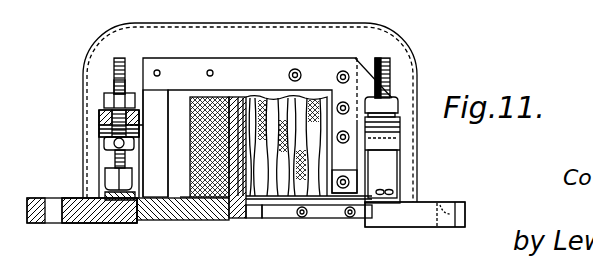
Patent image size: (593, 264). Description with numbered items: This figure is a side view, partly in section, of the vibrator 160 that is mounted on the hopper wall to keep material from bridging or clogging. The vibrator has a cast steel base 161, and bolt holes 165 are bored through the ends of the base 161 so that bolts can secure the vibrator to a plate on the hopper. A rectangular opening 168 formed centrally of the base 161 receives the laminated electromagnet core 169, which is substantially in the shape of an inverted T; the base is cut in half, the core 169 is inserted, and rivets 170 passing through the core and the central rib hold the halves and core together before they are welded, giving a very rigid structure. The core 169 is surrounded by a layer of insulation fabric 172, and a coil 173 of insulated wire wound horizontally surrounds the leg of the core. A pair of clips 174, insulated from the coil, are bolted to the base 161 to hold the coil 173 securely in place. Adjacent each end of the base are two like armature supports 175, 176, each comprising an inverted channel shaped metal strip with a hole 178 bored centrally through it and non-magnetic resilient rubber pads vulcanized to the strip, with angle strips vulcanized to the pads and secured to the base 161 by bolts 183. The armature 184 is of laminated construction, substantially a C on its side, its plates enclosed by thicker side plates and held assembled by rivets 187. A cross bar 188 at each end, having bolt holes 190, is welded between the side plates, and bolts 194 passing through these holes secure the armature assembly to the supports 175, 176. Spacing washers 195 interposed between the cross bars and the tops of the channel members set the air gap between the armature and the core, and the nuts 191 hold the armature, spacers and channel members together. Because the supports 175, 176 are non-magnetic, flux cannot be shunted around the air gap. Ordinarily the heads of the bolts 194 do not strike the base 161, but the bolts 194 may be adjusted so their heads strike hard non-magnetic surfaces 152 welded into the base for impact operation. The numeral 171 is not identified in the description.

The base plate 152 is at (108, 223).
The vibrator 160 is at (100, 118).
The base 161 is at (400, 223).
The bolt holes 165 is at (50, 210).
The rectangular opening 168 is at (145, 221).
The electromagnet core 169 is at (234, 221).
The rivets 170 is at (302, 219).
The contact 171 is at (185, 197).
The insulation fabric 172 is at (240, 100).
The coil 173 is at (300, 103).
The clips 174 is at (247, 100).
The armature support 175 is at (393, 167).
The armature support 176 is at (107, 160).
The hole 178 is at (178, 151).
The bolts 183 is at (388, 187).
The armature 184 is at (167, 62).
The rivets 187 is at (296, 68).
The cross bar 188 is at (104, 100).
The bolt holes 190 is at (110, 96).
The nuts 191 is at (395, 107).
The bolts 194 is at (113, 72).
The spacing washers 195 is at (100, 132).